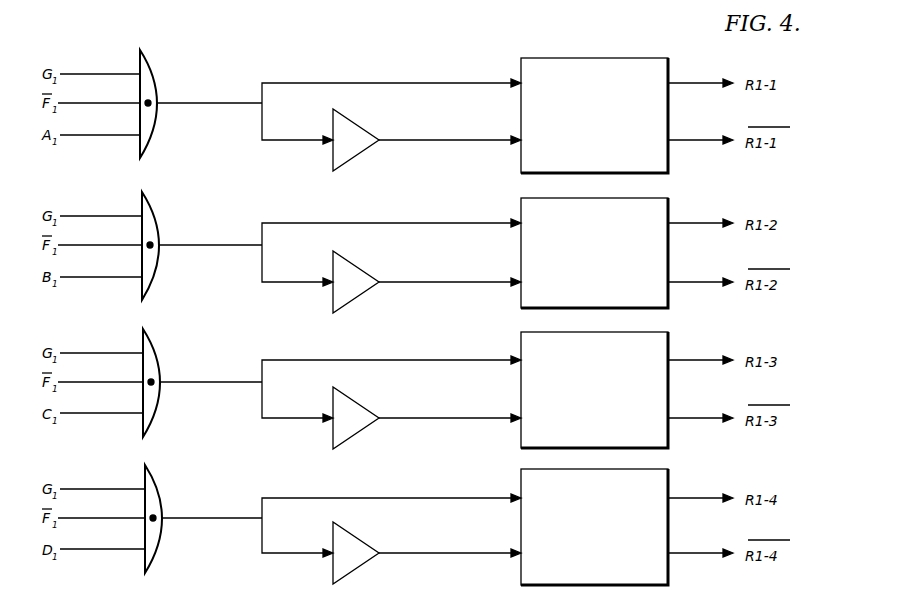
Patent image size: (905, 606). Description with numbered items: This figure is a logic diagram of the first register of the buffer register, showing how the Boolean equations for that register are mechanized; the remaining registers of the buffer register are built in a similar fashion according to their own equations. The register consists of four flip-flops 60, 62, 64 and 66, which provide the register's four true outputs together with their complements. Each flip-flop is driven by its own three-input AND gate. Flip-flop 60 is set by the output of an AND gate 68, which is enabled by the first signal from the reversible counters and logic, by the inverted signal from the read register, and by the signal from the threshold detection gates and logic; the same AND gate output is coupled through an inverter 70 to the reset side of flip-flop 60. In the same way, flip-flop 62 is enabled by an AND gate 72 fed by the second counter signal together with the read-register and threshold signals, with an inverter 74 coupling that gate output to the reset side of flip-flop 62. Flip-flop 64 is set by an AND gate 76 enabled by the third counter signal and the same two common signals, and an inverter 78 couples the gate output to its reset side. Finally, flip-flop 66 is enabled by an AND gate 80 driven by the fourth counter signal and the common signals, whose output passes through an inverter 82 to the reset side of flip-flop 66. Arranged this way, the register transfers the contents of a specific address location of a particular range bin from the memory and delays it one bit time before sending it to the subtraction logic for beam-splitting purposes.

The flip-flop 60 is at (642, 65).
The flip-flop 62 is at (655, 213).
The flip-flop 64 is at (660, 355).
The flip-flop 66 is at (657, 492).
The AND gate 68 is at (152, 67).
The inverter 70 is at (347, 155).
The AND gate 72 is at (155, 215).
The inverter 74 is at (350, 292).
The AND gate 76 is at (153, 352).
The inverter 78 is at (350, 428).
The AND gate 80 is at (157, 492).
The inverter 82 is at (350, 563).